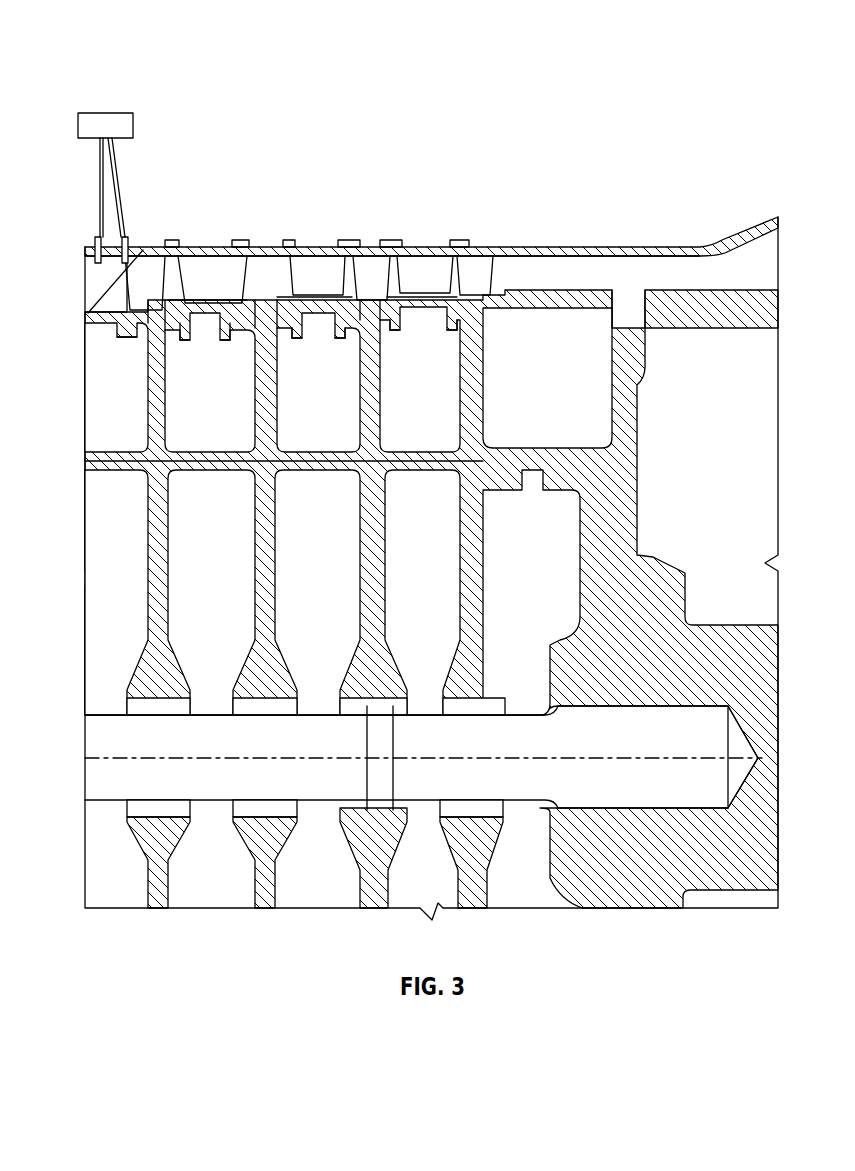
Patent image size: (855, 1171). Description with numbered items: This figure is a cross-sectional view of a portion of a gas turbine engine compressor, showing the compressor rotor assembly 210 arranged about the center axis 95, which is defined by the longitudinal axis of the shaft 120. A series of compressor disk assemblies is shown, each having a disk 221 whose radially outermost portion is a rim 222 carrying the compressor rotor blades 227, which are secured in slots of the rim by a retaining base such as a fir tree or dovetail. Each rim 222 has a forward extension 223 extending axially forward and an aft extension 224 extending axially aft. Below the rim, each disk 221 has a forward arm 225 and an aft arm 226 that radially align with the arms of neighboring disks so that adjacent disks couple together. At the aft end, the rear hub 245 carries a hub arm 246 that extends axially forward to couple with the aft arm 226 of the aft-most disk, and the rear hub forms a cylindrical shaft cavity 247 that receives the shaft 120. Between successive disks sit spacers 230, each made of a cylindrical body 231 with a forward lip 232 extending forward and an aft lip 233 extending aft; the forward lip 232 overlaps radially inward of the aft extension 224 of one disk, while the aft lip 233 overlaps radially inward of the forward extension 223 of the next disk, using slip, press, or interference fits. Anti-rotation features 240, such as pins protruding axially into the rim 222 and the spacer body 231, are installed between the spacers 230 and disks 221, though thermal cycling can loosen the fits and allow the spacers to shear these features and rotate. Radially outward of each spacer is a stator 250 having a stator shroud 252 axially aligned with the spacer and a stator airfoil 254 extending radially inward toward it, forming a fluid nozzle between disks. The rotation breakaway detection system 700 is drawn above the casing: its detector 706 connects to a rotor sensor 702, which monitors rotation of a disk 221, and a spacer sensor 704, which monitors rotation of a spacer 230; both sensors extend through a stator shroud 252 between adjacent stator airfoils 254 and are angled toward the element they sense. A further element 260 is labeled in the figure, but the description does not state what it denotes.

The rotation breakaway detection system 700 is at (104, 126).
The rotor sensor 702 is at (124, 232).
The spacer sensor 704 is at (96, 238).
The detector 706 is at (105, 118).
The compressor rotor assembly 210 is at (80, 505).
The shaft 120 is at (110, 748).
The center axis 95 is at (148, 762).
The disk 221 is at (166, 392).
The rim 222 is at (150, 372).
The forward extension 223 is at (262, 300).
The aft extension 224 is at (154, 280).
The forward arm 225 is at (130, 472).
The aft arm 226 is at (196, 462).
The compressor rotor blade 227 is at (100, 316).
The spacer 230 is at (95, 308).
The cylindrical body 231 is at (192, 328).
The forward lip 232 is at (180, 335).
The aft lip 233 is at (230, 333).
The anti-rotation feature 240 is at (261, 279).
The rear hub 245 is at (640, 412).
The hub arm 246 is at (560, 470).
The shaft cavity 247 is at (688, 718).
The stator 250 is at (76, 252).
The stator shroud 252 is at (93, 245).
The stator airfoil 254 is at (103, 283).
The seal ring 260 is at (128, 268).